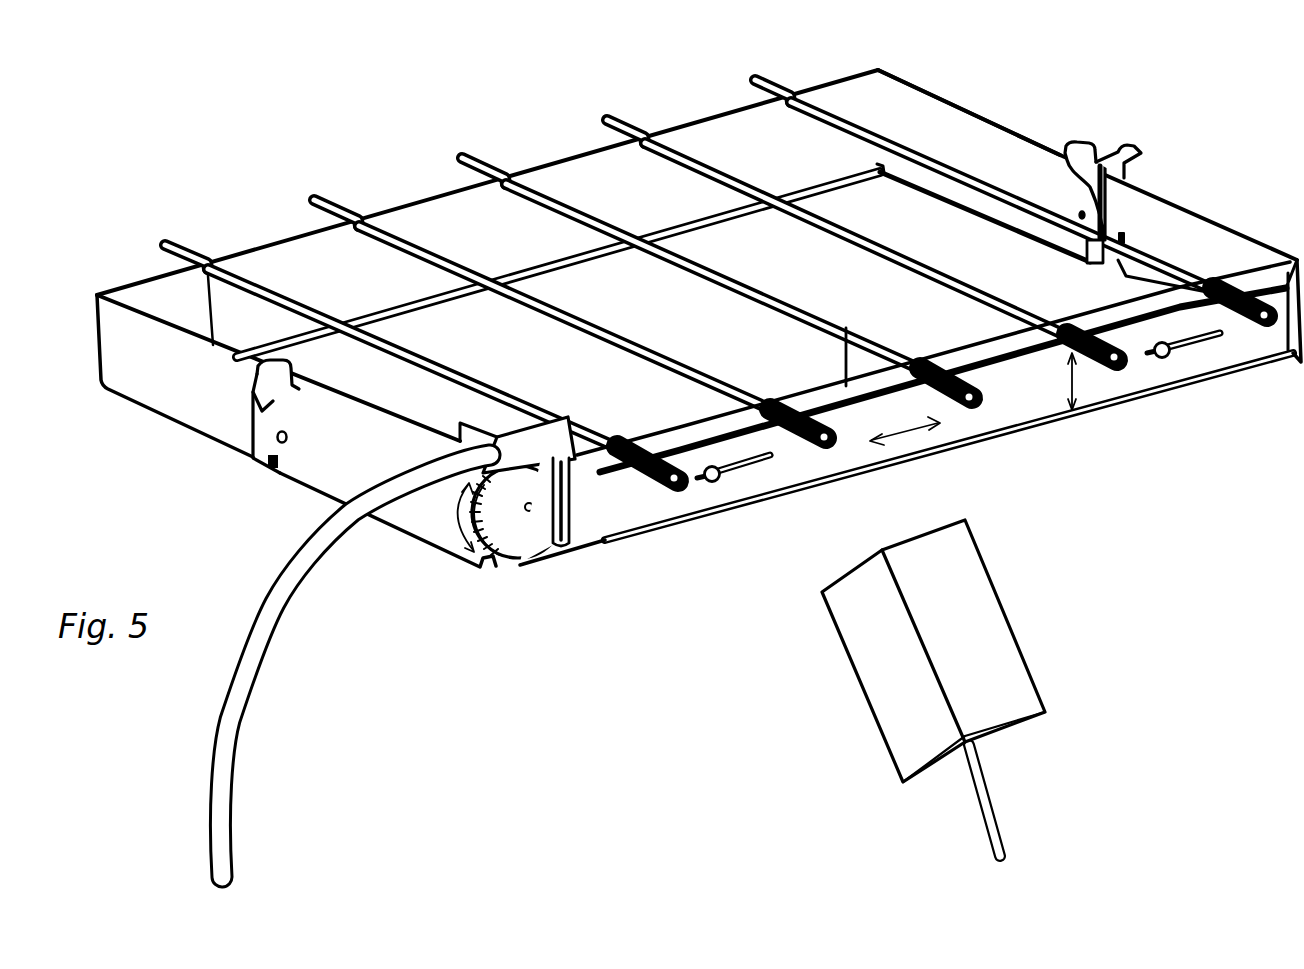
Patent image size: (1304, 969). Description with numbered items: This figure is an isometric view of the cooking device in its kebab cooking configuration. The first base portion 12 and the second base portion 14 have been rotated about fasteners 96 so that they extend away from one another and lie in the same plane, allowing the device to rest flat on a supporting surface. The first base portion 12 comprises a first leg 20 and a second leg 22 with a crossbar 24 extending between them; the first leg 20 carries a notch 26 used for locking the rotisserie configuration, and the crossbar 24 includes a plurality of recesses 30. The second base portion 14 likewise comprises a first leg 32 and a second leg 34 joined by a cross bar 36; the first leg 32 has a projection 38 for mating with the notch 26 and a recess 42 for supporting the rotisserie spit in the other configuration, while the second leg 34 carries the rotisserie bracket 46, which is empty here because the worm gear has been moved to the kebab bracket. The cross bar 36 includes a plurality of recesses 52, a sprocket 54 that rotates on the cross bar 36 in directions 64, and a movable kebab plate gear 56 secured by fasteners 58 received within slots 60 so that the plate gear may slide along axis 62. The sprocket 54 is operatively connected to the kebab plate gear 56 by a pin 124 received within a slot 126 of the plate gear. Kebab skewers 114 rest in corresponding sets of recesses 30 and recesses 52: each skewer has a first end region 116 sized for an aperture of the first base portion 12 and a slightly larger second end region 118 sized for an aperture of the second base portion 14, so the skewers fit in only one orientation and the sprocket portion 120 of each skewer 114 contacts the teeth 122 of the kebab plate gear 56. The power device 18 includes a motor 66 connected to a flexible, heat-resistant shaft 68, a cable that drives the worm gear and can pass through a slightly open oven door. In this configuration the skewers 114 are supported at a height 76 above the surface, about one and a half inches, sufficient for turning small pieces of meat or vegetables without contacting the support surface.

The first base portion 12 is at (965, 130).
The second base portion 14 is at (1176, 218).
The power device 18 is at (985, 585).
The first leg 20 is at (195, 412).
The second leg 22 is at (923, 97).
The crossbar 24 is at (577, 168).
The notch 26 is at (318, 388).
The recesses 30 is at (650, 125).
The first leg 32 is at (445, 525).
The second leg 34 is at (1232, 241).
The cross bar 36 is at (948, 357).
The projection 38 is at (263, 470).
The recess 42 is at (250, 405).
The rotisserie bracket 46 is at (1135, 148).
The recesses 52 is at (1066, 328).
The sprocket 54 is at (530, 548).
The kebab plate gear 56 is at (1050, 410).
The fasteners 58 is at (1166, 362).
The slots 60 is at (1214, 345).
The axis 62 is at (905, 445).
The directions 64 is at (455, 525).
The motor 66 is at (998, 630).
The shaft 68 is at (262, 632).
The height 76 is at (1076, 383).
The fasteners 96 is at (293, 436).
The kebab skewers 114 is at (758, 298).
The first end region 116 is at (472, 155).
The second end region 118 is at (630, 440).
The sprocket portion 120 is at (660, 483).
The teeth 122 is at (846, 330).
The pin 124 is at (576, 482).
The slot 126 is at (574, 540).